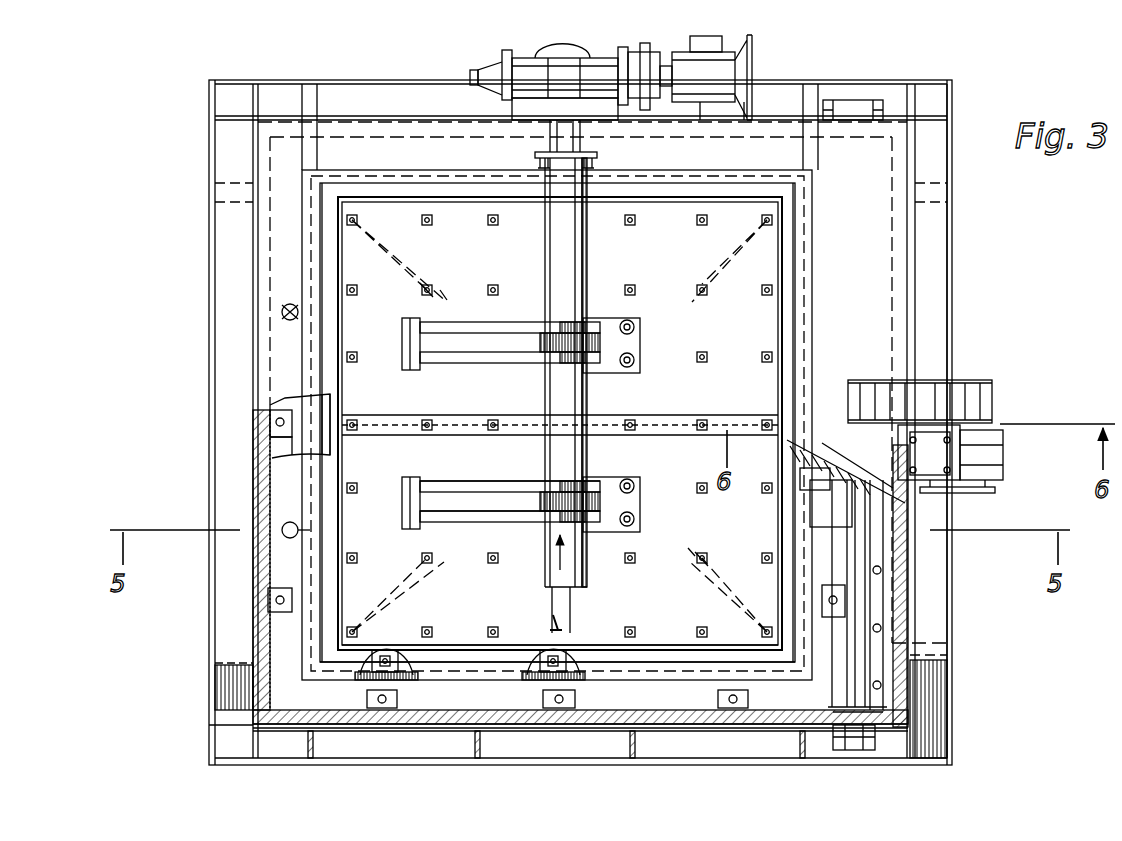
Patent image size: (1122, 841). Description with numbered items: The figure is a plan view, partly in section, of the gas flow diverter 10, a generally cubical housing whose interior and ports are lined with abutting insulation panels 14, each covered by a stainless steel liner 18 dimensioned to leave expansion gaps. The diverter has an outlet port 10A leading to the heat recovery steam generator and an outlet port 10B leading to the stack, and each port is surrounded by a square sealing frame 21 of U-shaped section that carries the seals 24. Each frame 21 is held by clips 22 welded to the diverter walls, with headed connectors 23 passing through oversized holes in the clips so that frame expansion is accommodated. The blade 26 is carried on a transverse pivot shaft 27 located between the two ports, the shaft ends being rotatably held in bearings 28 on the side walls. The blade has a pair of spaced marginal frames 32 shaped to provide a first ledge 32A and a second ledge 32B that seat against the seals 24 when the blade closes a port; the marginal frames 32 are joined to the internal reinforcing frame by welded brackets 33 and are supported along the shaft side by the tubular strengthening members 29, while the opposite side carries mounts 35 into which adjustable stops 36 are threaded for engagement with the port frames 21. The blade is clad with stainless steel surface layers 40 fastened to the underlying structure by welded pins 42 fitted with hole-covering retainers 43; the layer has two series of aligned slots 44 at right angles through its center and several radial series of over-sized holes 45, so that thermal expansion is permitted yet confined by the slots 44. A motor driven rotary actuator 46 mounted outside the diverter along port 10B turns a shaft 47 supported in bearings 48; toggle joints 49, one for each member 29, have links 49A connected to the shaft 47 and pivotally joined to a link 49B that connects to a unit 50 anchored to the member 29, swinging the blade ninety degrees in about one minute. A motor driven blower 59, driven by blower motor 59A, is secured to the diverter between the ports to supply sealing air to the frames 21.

The gas flow diverter 10 is at (207, 246).
The diverter outlet port 10A is at (957, 291).
The diverter outlet port 10B is at (792, 318).
The insulation panels 14 is at (455, 715).
The stainless steel liner 18 is at (498, 715).
The sealing frame 21 is at (290, 450).
The clips 22 is at (283, 401).
The headed connectors 23 is at (270, 425).
The seals 24 is at (333, 453).
The blade 26 is at (470, 405).
The pivot shaft 27 is at (873, 610).
The bearings 28 is at (853, 100).
The tubular strengthening members 29 is at (820, 508).
The marginal frames 32 is at (310, 562).
The first ledge 32A is at (442, 648).
The second ledge 32B is at (472, 665).
The brackets 33 is at (365, 668).
The mounts 35 is at (260, 545).
The adjustable stops 36 is at (282, 314).
The cladding surface layers 40 is at (455, 212).
The pins 42 is at (353, 352).
The retainers 43 is at (433, 290).
The aligned slots 44 is at (425, 421).
The over-sized holes 45 is at (559, 426).
The rotary actuator 46 is at (712, 69).
The actuator shaft 47 is at (588, 272).
The bearings 48 is at (597, 156).
The toggle joints 49 is at (523, 318).
The toggle joint links 49A is at (470, 488).
The toggle joint link 49B is at (465, 518).
The toggle joint unit 50 is at (643, 337).
The motor driven blower 59 is at (995, 394).
The blower motor 59A is at (1004, 455).